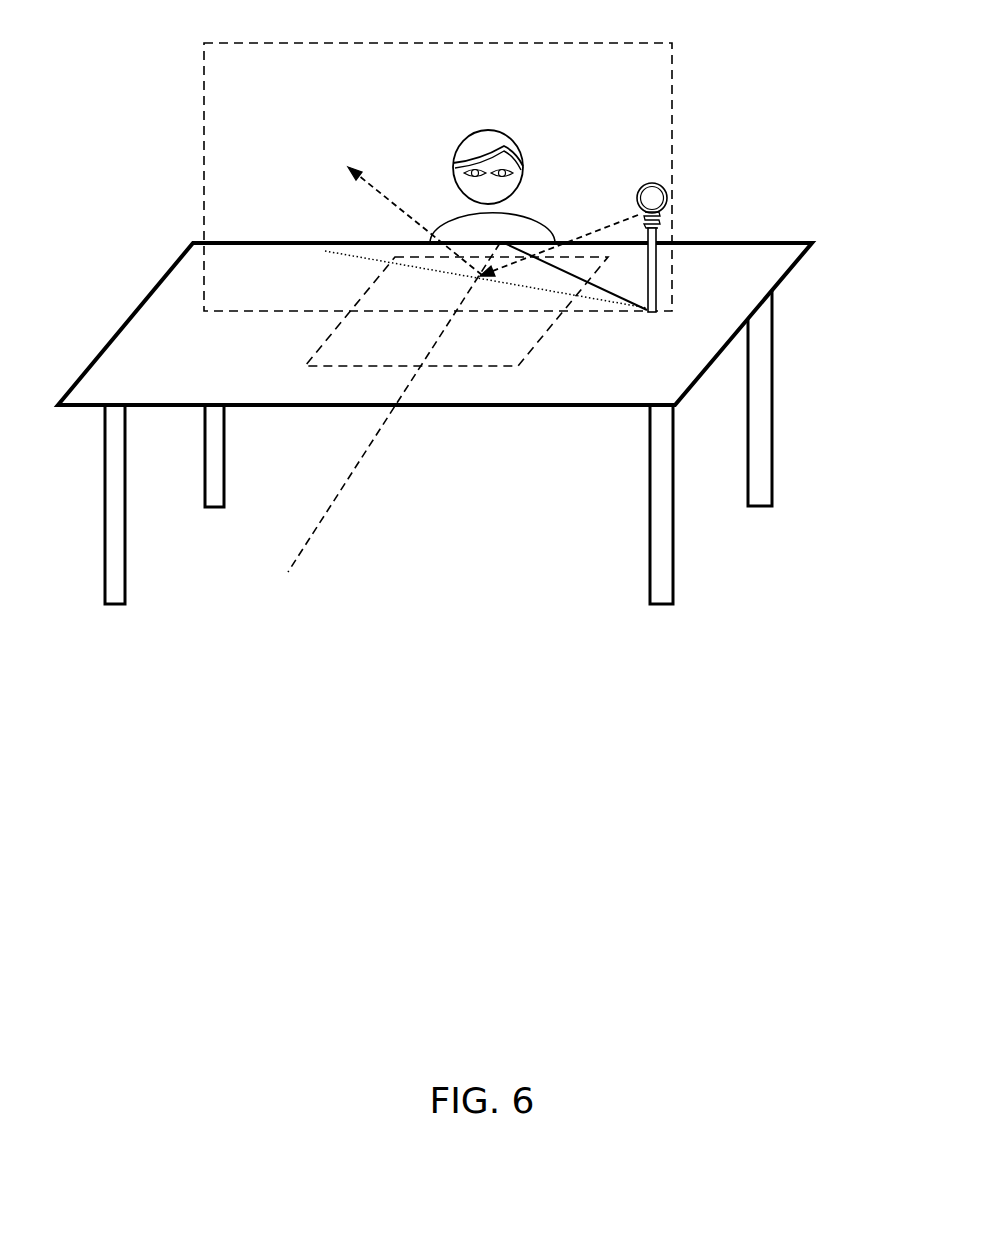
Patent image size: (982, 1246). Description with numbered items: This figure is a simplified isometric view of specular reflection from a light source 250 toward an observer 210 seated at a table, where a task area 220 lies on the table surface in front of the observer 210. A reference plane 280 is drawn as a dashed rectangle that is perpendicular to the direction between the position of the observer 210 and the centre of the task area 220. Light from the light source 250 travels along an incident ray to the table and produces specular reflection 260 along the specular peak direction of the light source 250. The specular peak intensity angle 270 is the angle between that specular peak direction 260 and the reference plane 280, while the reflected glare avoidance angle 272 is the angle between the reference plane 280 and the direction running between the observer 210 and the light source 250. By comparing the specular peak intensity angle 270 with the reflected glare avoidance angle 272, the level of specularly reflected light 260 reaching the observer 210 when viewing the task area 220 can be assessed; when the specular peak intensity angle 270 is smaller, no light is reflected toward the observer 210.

The observer 210 is at (508, 136).
The task area 220 is at (380, 357).
The light source 250 is at (655, 186).
The specular reflection 260 is at (362, 176).
The specular peak intensity angle 270 is at (517, 290).
The reflected glare avoidance angle 272 is at (597, 285).
The reference plane 280 is at (270, 297).